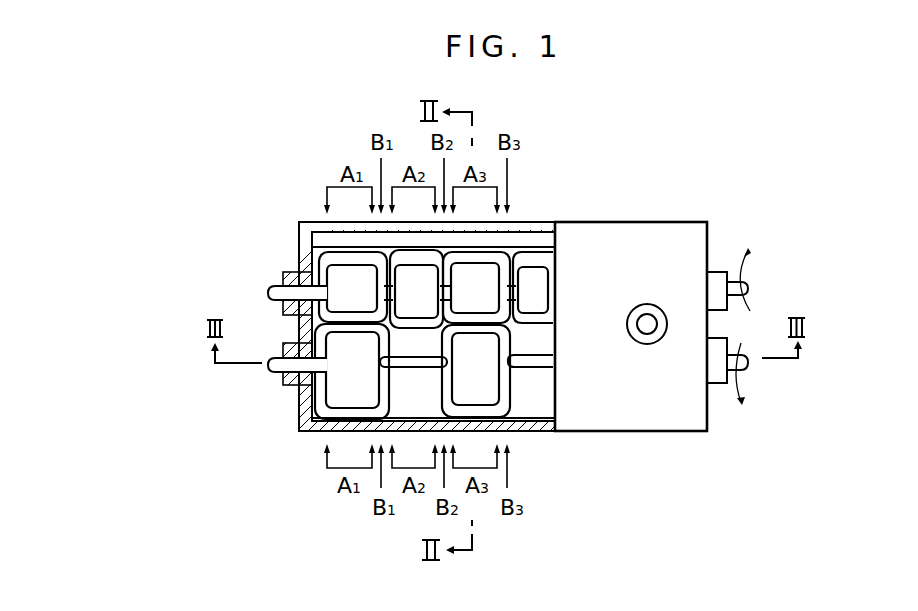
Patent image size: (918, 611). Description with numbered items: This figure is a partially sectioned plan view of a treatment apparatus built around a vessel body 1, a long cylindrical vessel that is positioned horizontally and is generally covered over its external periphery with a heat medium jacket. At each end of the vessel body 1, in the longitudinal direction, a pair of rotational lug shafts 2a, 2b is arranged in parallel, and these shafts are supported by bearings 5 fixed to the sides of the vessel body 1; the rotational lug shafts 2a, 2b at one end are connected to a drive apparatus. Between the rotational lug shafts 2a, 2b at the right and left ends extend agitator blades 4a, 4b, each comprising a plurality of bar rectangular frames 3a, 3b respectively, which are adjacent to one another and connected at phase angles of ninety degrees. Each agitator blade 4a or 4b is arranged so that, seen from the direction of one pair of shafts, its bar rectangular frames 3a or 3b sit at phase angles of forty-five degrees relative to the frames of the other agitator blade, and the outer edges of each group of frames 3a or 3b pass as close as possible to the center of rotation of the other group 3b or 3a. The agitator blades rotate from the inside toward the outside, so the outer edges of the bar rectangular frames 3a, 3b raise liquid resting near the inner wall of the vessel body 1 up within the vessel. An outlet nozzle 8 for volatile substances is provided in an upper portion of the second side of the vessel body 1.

The vessel body 1 is at (624, 221).
The rotational lug shaft 2a is at (268, 374).
The rotational lug shaft 2b is at (272, 283).
The bar rectangular frame 3a is at (438, 407).
The bar rectangular frame 3b is at (474, 252).
The agitator blade 4a is at (378, 393).
The agitator blade 4b is at (353, 252).
The bearing 5 is at (297, 272).
The outlet nozzle for volatile substances 8 is at (643, 305).